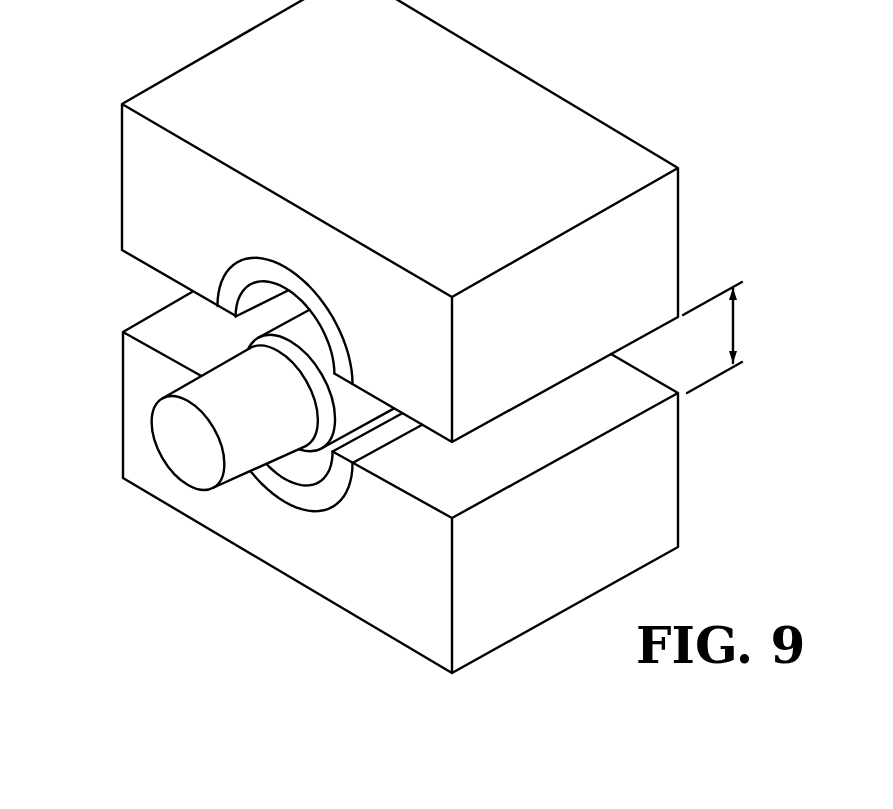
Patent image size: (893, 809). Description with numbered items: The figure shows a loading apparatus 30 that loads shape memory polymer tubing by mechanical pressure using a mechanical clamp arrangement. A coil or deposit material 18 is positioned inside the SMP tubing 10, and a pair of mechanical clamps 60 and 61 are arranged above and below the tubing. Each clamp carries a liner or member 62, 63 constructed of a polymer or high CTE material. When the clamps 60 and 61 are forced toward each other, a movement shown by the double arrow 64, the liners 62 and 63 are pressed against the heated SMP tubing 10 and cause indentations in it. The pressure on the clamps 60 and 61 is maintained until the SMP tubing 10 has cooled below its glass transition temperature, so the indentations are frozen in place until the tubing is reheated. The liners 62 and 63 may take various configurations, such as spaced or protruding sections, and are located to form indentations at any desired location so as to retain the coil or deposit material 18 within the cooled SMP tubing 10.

The SMP tubing 10 is at (253, 340).
The coil or deposit material 18 is at (183, 440).
The loading apparatus 30 is at (158, 45).
The mechanical clamp 60 is at (680, 253).
The mechanical clamp 61 is at (680, 465).
The liner or member 62 is at (245, 268).
The liner or member 63 is at (288, 488).
The double arrow 64 is at (733, 327).